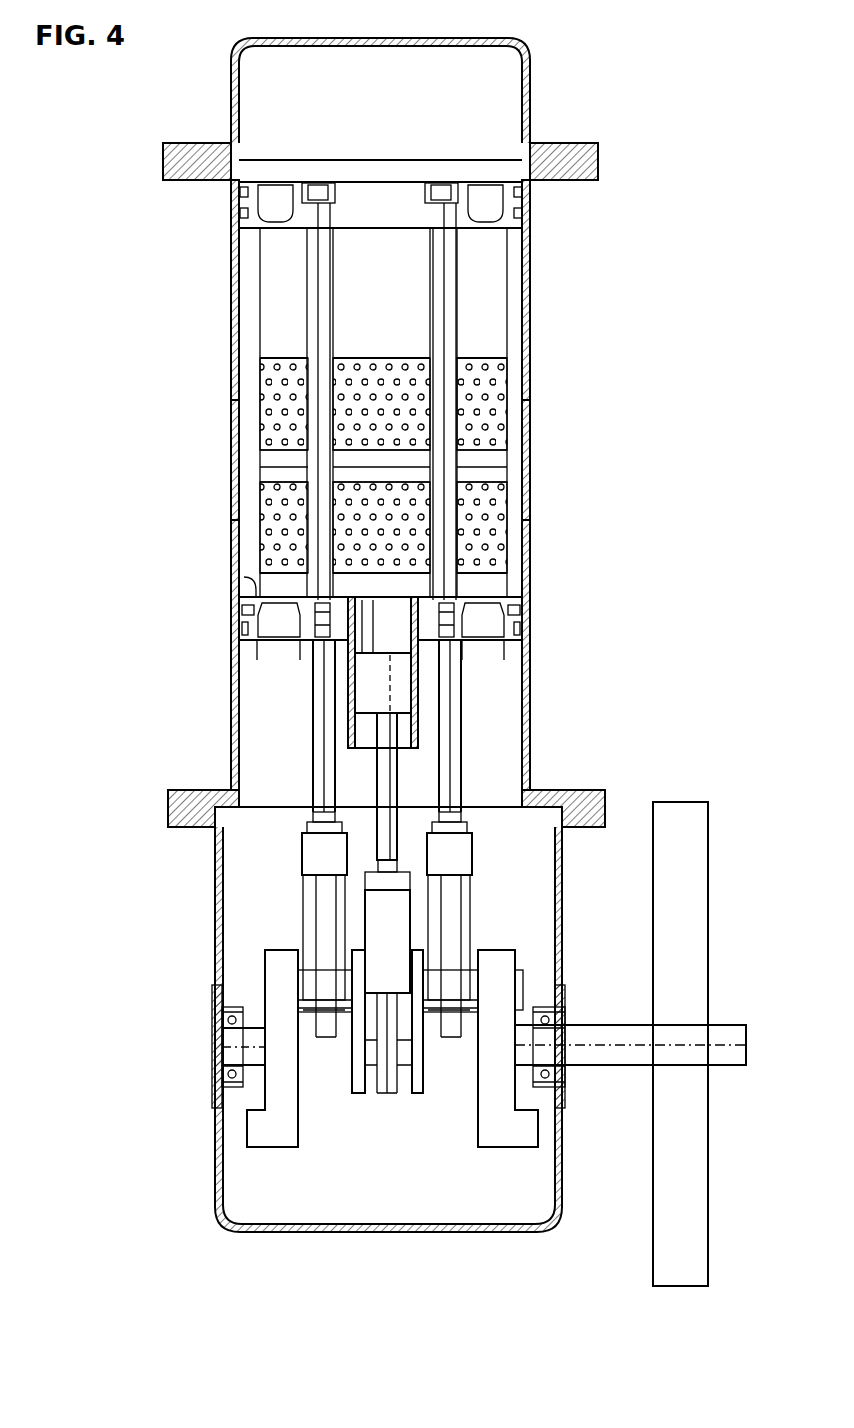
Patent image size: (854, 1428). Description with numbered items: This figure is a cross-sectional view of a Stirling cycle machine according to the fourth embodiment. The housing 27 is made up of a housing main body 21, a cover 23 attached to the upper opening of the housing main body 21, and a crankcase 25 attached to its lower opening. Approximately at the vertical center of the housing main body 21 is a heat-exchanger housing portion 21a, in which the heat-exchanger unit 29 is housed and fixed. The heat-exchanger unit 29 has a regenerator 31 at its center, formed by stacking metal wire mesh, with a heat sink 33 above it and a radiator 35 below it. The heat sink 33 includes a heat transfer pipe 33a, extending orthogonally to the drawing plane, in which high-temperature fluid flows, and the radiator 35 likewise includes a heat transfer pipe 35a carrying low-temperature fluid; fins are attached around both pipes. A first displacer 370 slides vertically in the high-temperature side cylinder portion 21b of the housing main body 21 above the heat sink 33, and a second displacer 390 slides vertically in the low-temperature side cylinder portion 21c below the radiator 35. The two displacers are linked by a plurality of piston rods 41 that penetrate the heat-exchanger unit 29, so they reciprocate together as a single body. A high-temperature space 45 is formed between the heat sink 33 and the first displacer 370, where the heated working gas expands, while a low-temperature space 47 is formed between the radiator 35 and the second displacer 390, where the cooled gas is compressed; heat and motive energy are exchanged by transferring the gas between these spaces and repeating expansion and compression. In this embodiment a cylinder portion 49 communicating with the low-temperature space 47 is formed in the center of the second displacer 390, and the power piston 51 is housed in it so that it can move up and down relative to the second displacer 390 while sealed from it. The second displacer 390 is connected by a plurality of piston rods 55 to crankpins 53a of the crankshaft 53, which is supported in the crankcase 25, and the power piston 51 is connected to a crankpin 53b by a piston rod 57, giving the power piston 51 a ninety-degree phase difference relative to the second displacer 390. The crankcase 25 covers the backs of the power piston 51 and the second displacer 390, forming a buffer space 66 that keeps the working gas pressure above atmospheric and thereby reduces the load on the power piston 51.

The cover 23 is at (349, 38).
The housing 27 is at (533, 247).
The housing main body 21 is at (464, 485).
The heat-exchanger housing portion 21a is at (532, 471).
The high-temperature side cylinder portion 21b is at (532, 318).
The low-temperature side cylinder portion 21c is at (436, 652).
The first displacer 370 is at (273, 233).
The high-temperature space 45 is at (513, 297).
The piston rods 41 is at (322, 278).
The heat-exchanger unit 29 is at (304, 456).
The heat transfer pipe 33a is at (260, 362).
The heat sink 33 is at (260, 397).
The regenerator 31 is at (262, 466).
The radiator 35 is at (262, 515).
The heat transfer pipe 35a is at (320, 560).
The second displacer 390 is at (257, 580).
The low-temperature space 47 is at (487, 585).
The cylinder portion 49 is at (353, 658).
The power piston 51 is at (405, 690).
The piston rod 57 is at (378, 768).
The piston rods 55 is at (317, 705).
The crankcase 25 is at (392, 1232).
The buffer space 66 is at (467, 1192).
The crankshaft 53 is at (479, 1055).
The crankpins 53a is at (307, 1002).
The crankpin 53b is at (405, 1067).